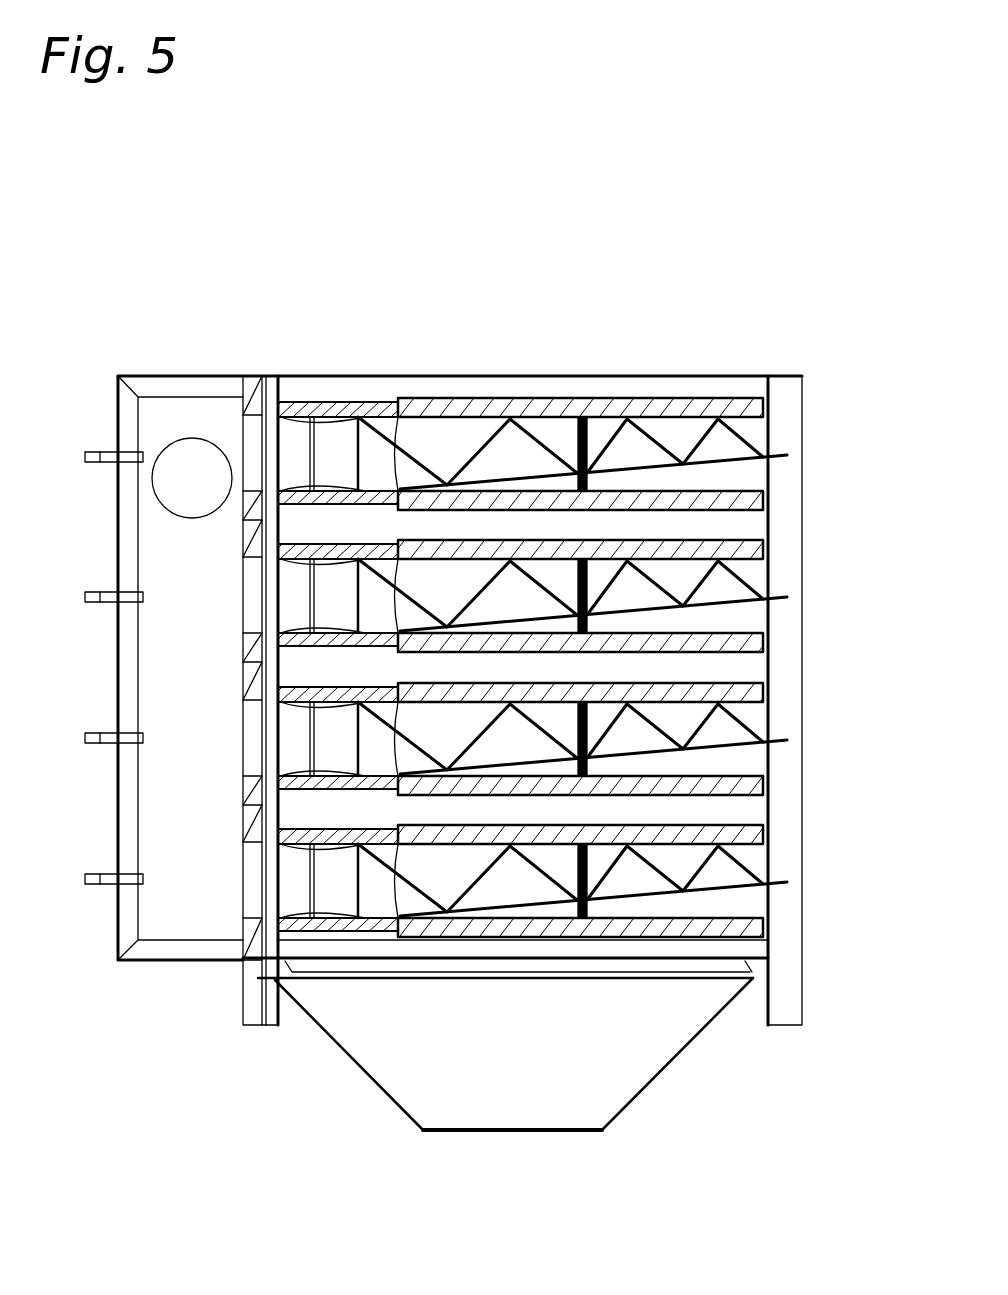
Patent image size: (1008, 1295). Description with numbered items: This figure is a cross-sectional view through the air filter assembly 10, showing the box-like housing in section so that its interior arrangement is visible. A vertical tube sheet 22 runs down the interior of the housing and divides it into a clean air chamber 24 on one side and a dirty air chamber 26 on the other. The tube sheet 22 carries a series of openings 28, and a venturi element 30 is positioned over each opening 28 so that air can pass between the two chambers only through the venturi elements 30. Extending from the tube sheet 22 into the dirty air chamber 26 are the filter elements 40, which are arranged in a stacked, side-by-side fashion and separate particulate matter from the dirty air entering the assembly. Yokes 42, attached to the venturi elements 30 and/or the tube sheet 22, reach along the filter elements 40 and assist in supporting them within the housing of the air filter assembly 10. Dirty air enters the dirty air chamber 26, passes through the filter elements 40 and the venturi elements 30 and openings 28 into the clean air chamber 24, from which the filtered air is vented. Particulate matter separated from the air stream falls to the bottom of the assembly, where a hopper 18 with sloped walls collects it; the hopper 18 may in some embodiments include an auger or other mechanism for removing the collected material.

The air filter assembly 10 is at (628, 268).
The hopper 18 is at (637, 1060).
The tube sheet 22 is at (296, 396).
The clean air chamber 24 is at (200, 573).
The dirty air chamber 26 is at (710, 671).
The openings 28 is at (270, 583).
The venturi elements 30 is at (330, 560).
The filter elements 40 is at (746, 411).
The yokes 42 is at (733, 461).